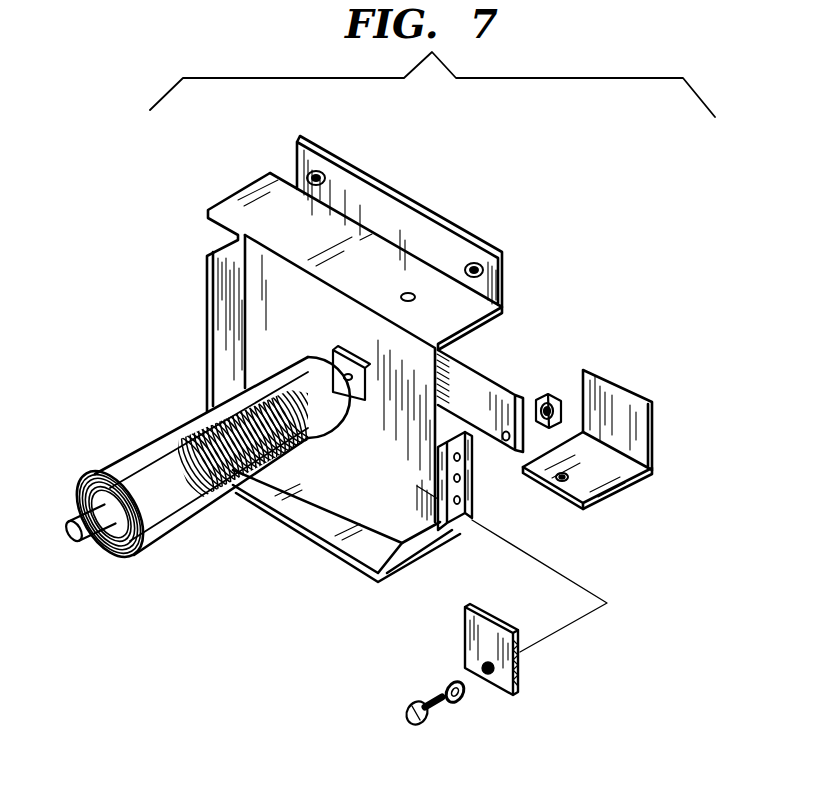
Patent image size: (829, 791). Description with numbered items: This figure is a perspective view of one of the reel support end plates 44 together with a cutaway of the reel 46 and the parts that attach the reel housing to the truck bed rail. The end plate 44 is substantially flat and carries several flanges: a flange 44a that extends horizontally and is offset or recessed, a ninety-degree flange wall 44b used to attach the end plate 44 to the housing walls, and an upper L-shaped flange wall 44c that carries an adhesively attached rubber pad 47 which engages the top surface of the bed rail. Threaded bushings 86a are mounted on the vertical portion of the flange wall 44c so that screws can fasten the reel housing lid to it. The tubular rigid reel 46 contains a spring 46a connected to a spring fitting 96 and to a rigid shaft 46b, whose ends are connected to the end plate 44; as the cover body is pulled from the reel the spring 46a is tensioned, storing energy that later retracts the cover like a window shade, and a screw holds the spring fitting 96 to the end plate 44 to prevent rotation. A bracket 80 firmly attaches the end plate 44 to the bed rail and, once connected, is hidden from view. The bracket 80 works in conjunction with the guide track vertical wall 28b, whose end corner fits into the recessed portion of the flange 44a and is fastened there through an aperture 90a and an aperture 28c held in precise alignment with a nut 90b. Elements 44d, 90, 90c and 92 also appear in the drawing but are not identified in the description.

The end plate 44 is at (262, 265).
The flange 44a is at (495, 392).
The flange wall 44b is at (438, 462).
The upper L-shaped flange wall 44c is at (385, 195).
The hole 44d is at (411, 295).
The rubber pad 47 is at (500, 312).
The threaded bushings 86a is at (318, 172).
The reel 46 is at (157, 452).
The spring 46a is at (220, 505).
The rigid shaft 46b is at (72, 540).
The spring fitting 96 is at (348, 358).
The bracket 80 is at (657, 427).
The screw 90 is at (420, 723).
The aperture 90a is at (502, 440).
The nut 90b is at (558, 398).
The washer 90c is at (450, 682).
The hole 92 is at (562, 474).
The guide track vertical wall 28b is at (513, 630).
The aperture 28c is at (488, 673).